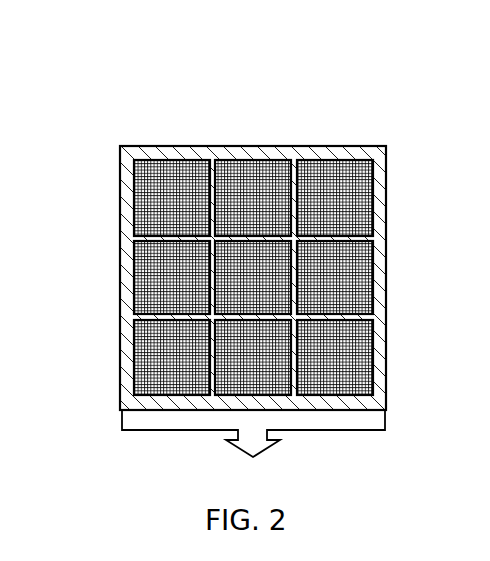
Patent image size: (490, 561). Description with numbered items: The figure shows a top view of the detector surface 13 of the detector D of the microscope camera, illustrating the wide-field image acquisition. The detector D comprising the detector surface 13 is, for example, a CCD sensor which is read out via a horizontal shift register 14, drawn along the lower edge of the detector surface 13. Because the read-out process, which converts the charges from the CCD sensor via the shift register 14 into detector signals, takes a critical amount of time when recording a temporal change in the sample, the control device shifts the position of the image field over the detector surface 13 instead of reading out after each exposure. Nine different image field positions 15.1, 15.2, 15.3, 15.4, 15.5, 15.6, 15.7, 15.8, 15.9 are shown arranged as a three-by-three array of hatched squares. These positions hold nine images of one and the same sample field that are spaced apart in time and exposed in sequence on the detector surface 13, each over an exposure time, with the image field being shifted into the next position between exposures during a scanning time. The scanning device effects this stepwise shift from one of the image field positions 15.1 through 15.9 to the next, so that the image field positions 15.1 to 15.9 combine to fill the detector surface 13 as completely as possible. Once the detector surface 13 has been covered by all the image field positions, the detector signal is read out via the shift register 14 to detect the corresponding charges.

The detector surface 13 is at (377, 146).
The horizontal shift register 14 is at (388, 420).
The image field position 15.1 is at (152, 160).
The image field position 15.2 is at (245, 160).
The image field position 15.3 is at (373, 182).
The image field position 15.4 is at (134, 280).
The image field position 15.5 is at (368, 318).
The image field position 15.6 is at (373, 277).
The image field position 15.7 is at (134, 378).
The image field position 15.8 is at (236, 395).
The image field position 15.9 is at (373, 370).
The detector D is at (318, 113).